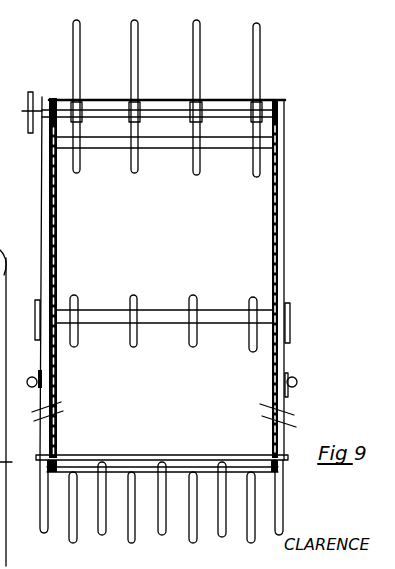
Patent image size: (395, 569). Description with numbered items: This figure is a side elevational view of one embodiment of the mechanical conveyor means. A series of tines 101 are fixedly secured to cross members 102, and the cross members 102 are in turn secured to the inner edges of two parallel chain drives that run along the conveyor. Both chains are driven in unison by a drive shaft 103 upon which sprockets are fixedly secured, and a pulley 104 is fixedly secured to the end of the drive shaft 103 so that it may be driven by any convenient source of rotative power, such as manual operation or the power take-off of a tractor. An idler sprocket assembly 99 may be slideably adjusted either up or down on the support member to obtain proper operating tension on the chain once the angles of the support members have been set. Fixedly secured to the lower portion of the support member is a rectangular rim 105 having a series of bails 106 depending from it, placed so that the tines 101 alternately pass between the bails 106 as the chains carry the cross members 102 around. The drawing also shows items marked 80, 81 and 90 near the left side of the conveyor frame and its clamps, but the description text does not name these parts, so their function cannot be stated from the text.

The support member 80 is at (6, 395).
The pivot 81 is at (10, 260).
The ring clamp 90 is at (28, 382).
The idler sprocket assembly 99 is at (38, 319).
The tines 101 is at (133, 52).
The cross members 102 is at (176, 102).
The drive shaft 103 is at (153, 110).
The pulley 104 is at (33, 92).
The rectangular rim 105 is at (223, 458).
The bails 106 is at (102, 518).